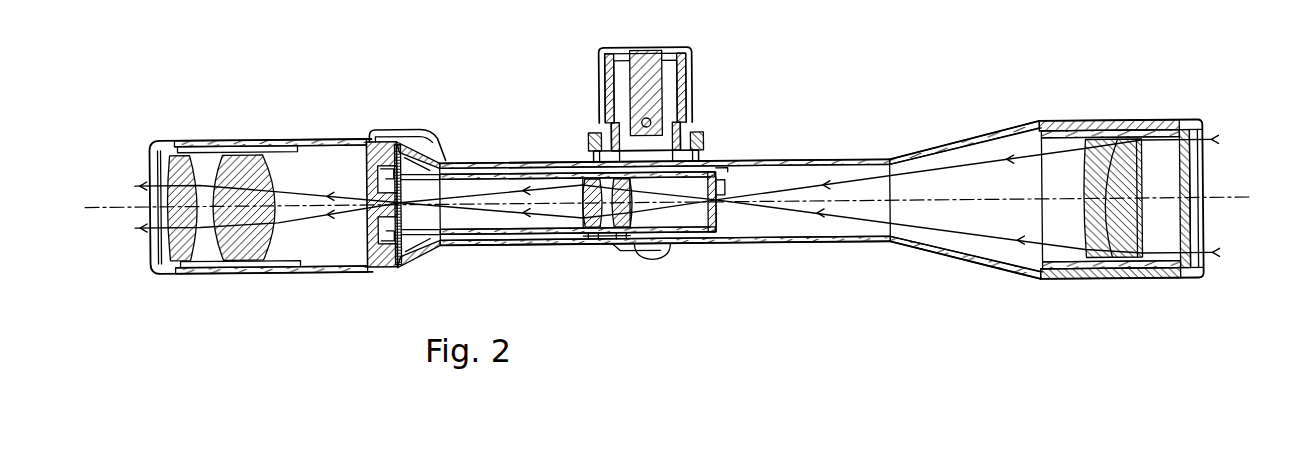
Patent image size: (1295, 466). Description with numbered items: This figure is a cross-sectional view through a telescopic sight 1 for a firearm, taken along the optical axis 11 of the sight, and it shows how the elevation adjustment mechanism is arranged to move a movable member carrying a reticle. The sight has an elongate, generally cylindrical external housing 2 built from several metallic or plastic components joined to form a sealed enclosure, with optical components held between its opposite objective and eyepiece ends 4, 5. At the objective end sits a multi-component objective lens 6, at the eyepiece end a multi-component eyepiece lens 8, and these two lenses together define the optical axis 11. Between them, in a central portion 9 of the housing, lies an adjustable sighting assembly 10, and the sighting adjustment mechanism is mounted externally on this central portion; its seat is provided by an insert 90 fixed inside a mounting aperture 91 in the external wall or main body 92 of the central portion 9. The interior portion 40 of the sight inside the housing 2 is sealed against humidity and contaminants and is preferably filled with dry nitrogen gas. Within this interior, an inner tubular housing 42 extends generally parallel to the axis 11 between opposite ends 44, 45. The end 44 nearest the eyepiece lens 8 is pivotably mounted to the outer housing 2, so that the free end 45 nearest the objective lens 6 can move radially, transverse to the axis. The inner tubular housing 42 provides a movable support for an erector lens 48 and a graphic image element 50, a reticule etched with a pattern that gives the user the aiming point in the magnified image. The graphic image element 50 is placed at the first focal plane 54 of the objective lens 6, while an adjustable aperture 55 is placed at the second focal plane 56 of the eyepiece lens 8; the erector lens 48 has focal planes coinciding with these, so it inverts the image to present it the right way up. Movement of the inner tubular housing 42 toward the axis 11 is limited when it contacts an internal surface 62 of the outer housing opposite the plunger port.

The telescopic sight 1 is at (226, 90).
The external housing 2 is at (963, 142).
The objective end 4 is at (1205, 140).
The eyepiece end 5 is at (150, 150).
The objective lens 6 is at (1118, 165).
The eyepiece lens 8 is at (243, 230).
The central portion 9 is at (717, 160).
The adjustable sighting assembly 10 is at (551, 170).
The optical axis 11 is at (1250, 202).
The interior portion 40 is at (758, 231).
The inner tubular housing 42 is at (590, 236).
The pivoted end of inner housing 44 is at (384, 243).
The free end of inner housing 45 is at (718, 238).
The erector lens 48 is at (620, 227).
The graphic image element 50 is at (727, 187).
The first focal plane 54 is at (723, 190).
The adjustable aperture 55 is at (367, 185).
The second focal plane 56 is at (403, 197).
The internal surface 62 is at (680, 243).
The insert 90 is at (592, 163).
The mounting aperture 91 is at (700, 150).
The main body 92 is at (604, 138).